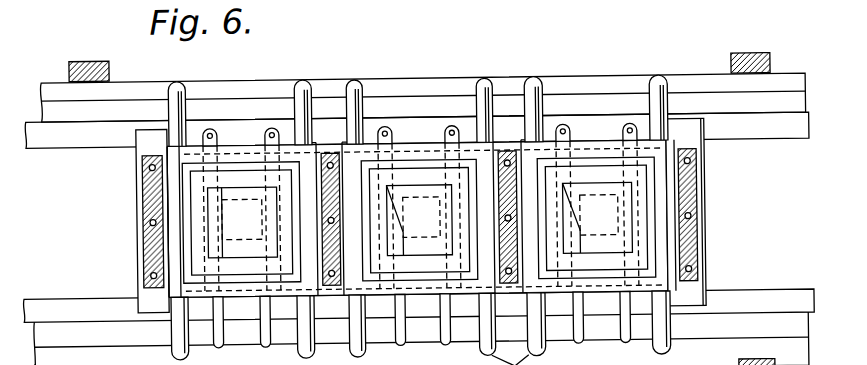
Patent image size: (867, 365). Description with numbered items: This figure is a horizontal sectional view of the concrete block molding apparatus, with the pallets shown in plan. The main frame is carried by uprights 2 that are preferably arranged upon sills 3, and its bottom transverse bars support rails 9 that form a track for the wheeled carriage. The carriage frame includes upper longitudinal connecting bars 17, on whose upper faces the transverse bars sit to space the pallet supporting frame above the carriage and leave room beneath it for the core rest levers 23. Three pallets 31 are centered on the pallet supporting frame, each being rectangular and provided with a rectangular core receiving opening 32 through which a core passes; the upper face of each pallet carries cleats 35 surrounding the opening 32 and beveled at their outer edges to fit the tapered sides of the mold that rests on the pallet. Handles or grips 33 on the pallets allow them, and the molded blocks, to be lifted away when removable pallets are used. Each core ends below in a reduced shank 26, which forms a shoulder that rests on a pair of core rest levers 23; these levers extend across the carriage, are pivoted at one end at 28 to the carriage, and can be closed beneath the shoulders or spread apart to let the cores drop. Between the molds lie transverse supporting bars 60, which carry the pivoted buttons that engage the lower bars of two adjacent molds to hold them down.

The uprights 2 is at (775, 50).
The sills 3 is at (418, 219).
The rails 9 is at (80, 133).
The upper longitudinal connecting bars 17 is at (155, 133).
The core rest levers 23 is at (220, 300).
The shank 26 is at (420, 220).
The pivot 28 is at (272, 127).
The pallets 31 is at (172, 176).
The core receiving openings 32 is at (418, 219).
The handles or grips 33 is at (348, 84).
The cleats 35 is at (187, 239).
The transverse supporting bars 60 is at (143, 198).